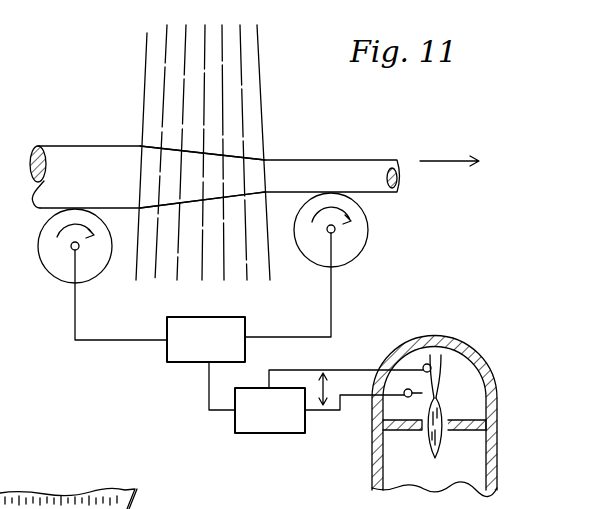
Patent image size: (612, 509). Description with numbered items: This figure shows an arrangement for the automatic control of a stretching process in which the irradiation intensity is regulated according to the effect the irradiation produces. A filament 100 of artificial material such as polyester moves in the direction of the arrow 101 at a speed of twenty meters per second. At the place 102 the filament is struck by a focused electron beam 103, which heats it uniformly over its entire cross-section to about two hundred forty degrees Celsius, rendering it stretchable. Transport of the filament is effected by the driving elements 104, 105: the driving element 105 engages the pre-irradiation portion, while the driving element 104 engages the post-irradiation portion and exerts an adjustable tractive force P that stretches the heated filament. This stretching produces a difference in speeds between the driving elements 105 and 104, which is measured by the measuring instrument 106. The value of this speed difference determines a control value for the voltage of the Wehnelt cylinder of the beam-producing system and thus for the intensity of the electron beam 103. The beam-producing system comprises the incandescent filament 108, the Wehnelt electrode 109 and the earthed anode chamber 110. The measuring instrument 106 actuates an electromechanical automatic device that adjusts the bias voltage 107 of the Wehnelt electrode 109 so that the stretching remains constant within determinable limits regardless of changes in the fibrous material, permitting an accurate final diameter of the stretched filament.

The filament 100 is at (92, 128).
The arrow 101 is at (443, 165).
The place 102 is at (178, 175).
The electron beam 103 is at (237, 95).
The driving element 104 is at (384, 246).
The driving element 105 is at (96, 272).
The measuring instrument 106 is at (185, 364).
The bias voltage 107 is at (330, 405).
The incandescent filament 108 is at (424, 365).
The Wehnelt electrode 109 is at (458, 398).
The earthed anode chamber 110 is at (403, 433).